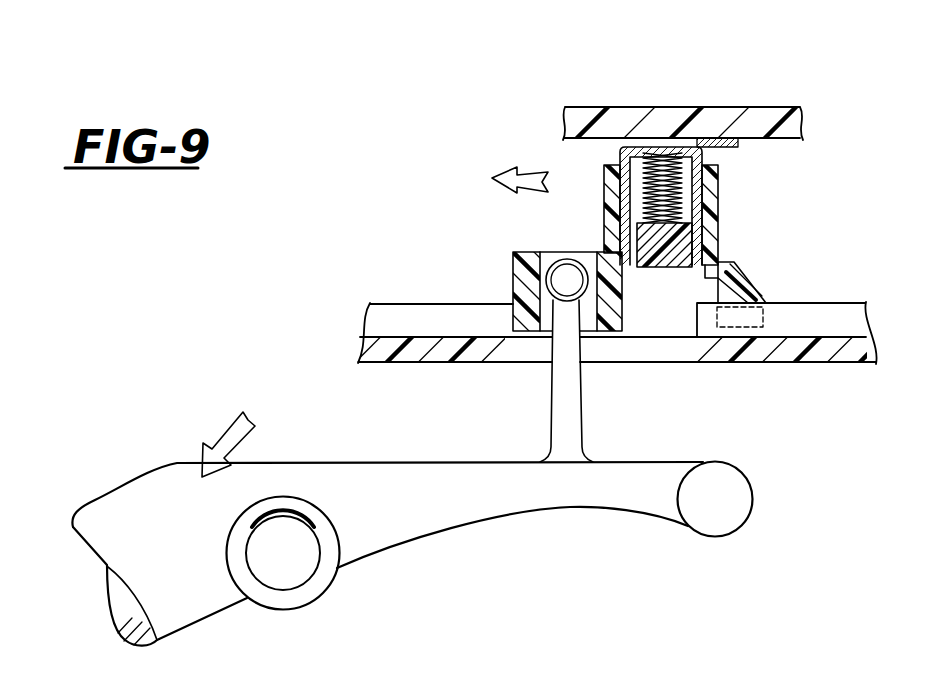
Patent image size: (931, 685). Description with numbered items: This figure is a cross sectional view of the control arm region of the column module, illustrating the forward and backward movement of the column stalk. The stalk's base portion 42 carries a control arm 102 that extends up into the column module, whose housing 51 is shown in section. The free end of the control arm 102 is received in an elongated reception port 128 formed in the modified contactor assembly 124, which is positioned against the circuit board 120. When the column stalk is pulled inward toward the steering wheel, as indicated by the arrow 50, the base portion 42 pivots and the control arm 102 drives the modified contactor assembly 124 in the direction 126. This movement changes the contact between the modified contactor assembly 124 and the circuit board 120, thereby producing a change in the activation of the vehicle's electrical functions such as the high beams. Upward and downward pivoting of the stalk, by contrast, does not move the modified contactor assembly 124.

The base portion 42 is at (122, 495).
The arrow 50 is at (223, 432).
The housing 51 is at (845, 353).
The control arm 102 is at (557, 270).
The circuit board 120 is at (707, 115).
The modified contactor assembly 124 is at (720, 227).
The direction 126 is at (530, 167).
The elongated reception port 128 is at (543, 313).